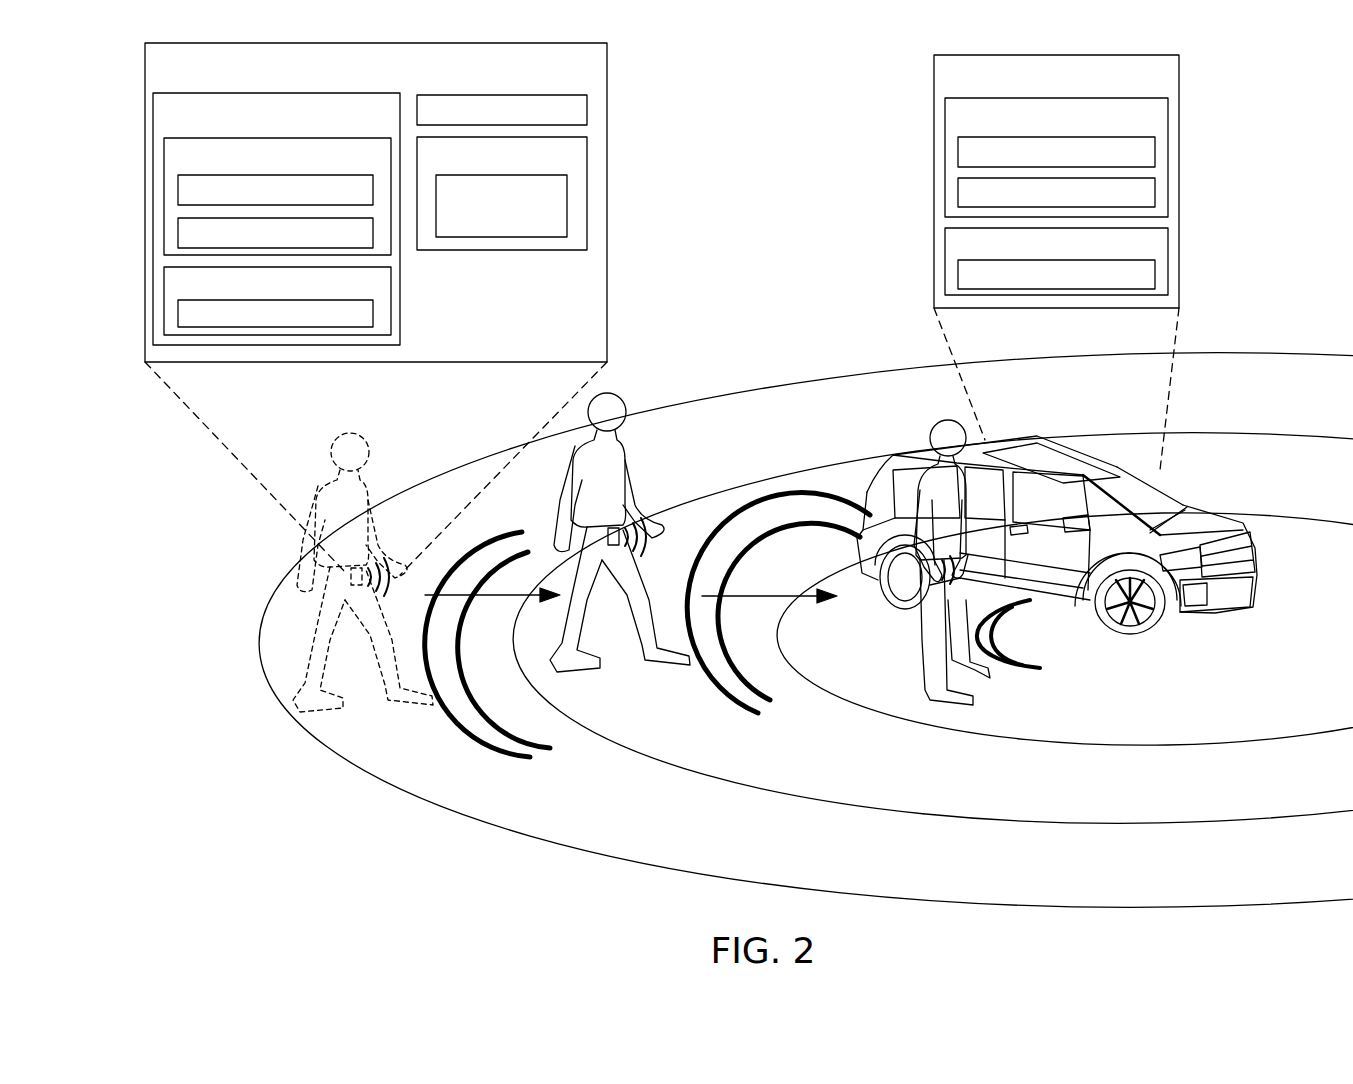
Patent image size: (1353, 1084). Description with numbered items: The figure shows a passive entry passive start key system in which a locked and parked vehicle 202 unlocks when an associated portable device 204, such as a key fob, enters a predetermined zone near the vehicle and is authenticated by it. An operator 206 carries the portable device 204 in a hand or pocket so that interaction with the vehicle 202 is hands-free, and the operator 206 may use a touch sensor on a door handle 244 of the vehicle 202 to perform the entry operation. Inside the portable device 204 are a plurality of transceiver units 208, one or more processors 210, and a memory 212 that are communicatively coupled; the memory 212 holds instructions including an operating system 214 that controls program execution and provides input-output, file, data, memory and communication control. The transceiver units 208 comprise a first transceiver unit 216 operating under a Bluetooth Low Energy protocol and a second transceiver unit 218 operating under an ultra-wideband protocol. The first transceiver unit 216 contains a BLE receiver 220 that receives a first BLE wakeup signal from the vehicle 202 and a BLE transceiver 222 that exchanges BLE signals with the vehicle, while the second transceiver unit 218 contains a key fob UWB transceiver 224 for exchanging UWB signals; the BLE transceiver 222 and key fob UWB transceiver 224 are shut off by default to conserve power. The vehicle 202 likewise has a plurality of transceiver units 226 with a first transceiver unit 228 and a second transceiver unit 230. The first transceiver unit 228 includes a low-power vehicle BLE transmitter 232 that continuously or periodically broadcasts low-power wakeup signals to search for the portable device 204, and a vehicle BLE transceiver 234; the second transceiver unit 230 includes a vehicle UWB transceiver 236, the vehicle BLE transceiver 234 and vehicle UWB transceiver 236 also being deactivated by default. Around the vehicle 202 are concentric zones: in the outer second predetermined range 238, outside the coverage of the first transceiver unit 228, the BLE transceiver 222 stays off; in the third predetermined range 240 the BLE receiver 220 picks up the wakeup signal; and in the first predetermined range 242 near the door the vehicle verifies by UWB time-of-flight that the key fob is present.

The vehicle 202 is at (1222, 617).
The portable device 204 is at (145, 68).
The operator 206 is at (630, 398).
The plurality of transceiver units 208 is at (153, 122).
The processors 210 is at (587, 108).
The memory 212 is at (587, 150).
The operating system 214 is at (567, 202).
The first transceiver unit 216 is at (164, 155).
The second transceiver unit 218 is at (164, 277).
The BLE receiver 220 is at (178, 188).
The BLE transceiver 222 is at (178, 230).
The key fob UWB transceiver 224 is at (178, 312).
The plurality of transceiver units 226 is at (934, 80).
The first transceiver unit 228 is at (945, 115).
The second transceiver unit 230 is at (945, 240).
The low-power vehicle BLE transmitter 232 is at (958, 150).
The vehicle BLE transceiver 234 is at (958, 192).
The vehicle UWB transceiver 236 is at (958, 273).
The second predetermined range 238 is at (366, 728).
The third predetermined range 240 is at (635, 715).
The first predetermined range 242 is at (988, 700).
The door handle 244 is at (1021, 533).